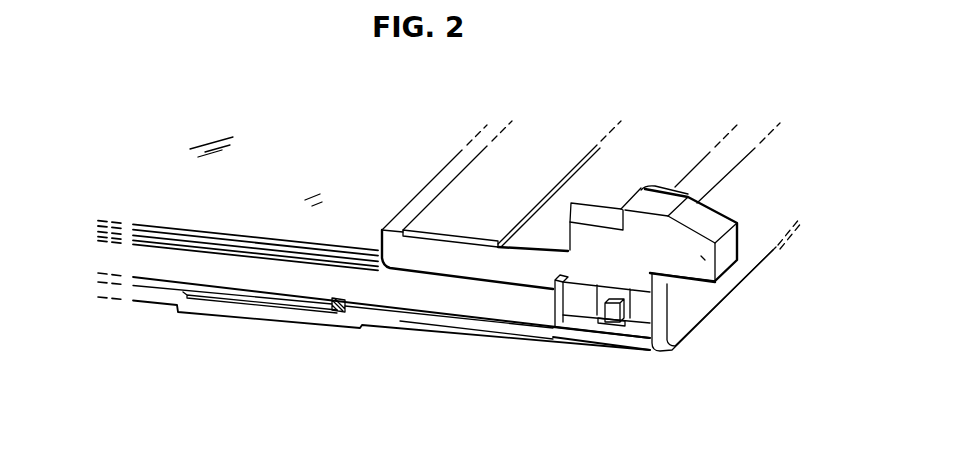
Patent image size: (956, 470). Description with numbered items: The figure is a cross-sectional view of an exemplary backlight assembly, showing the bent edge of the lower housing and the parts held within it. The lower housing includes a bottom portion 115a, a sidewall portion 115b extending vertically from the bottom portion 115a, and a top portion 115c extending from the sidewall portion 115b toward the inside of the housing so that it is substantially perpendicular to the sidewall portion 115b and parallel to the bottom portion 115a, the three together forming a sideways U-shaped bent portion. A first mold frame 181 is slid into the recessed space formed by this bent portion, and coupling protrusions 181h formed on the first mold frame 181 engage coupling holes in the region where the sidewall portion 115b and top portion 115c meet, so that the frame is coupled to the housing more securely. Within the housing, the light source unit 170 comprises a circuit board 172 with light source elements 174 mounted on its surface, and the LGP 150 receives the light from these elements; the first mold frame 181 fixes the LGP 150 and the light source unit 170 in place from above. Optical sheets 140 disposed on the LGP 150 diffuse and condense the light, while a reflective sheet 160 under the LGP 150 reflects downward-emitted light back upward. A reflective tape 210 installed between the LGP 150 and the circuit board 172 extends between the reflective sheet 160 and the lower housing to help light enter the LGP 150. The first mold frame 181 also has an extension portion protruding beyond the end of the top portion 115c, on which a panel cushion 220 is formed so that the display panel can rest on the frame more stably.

The optical sheets 140 is at (93, 217).
The LGP 150 is at (430, 311).
The reflective sheet 160 is at (250, 295).
The light source unit 170 is at (579, 358).
The circuit board 172 is at (552, 333).
The light source elements 174 is at (585, 302).
The first mold frame 181 is at (670, 297).
The coupling protrusions 181h is at (703, 258).
The bottom portion 115a is at (627, 348).
The sidewall portions 115b is at (660, 318).
The top portion 115c is at (619, 184).
The reflective tape 210 is at (333, 315).
The panel cushion 220 is at (518, 172).